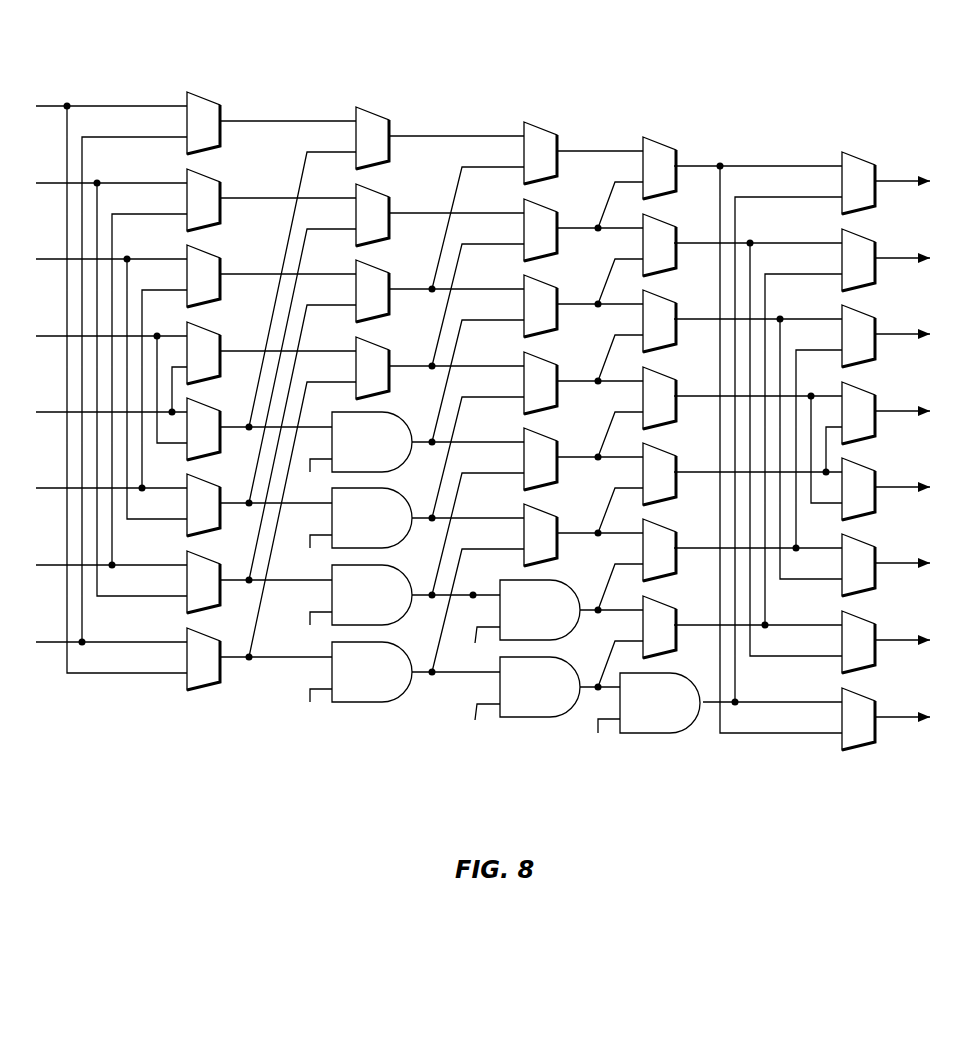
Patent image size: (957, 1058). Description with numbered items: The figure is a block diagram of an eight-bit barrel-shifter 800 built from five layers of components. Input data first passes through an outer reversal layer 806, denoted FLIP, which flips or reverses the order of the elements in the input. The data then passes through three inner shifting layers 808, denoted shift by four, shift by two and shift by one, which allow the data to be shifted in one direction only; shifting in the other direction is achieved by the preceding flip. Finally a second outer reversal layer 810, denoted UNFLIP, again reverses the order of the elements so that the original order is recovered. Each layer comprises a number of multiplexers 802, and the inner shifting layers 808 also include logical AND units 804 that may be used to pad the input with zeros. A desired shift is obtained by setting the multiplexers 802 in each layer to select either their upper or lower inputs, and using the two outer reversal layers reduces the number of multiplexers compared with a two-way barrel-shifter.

The barrel-shifter 800 is at (806, 54).
The multiplexer 802 is at (205, 97).
The logical AND unit 804 is at (358, 702).
The outer reversal layer 806 is at (182, 722).
The inner shifting layer 808 is at (359, 51).
The second outer reversal layer 810 is at (868, 815).